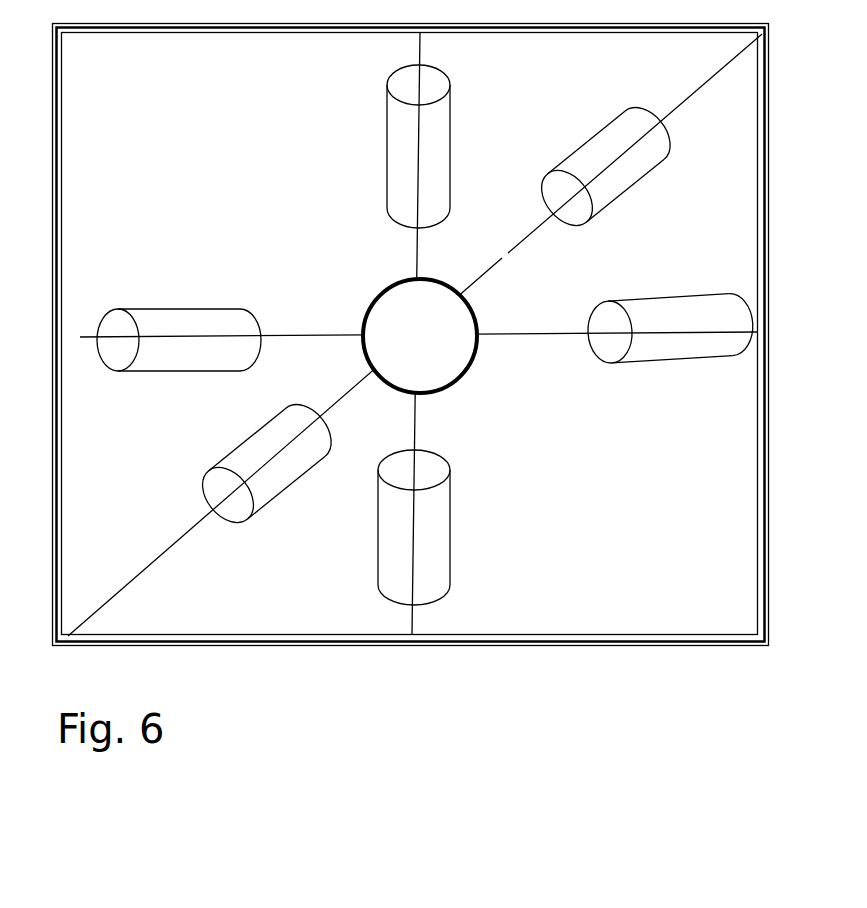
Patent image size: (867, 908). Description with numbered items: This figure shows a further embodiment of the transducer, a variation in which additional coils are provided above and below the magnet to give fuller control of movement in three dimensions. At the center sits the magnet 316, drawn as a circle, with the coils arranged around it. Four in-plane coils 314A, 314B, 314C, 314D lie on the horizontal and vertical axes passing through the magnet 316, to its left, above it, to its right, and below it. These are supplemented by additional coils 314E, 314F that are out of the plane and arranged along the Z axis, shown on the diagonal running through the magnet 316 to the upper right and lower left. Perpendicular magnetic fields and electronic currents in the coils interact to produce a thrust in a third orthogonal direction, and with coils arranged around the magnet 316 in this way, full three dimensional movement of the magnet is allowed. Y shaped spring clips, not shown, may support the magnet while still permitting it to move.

The coil 314A is at (183, 308).
The coil 314B is at (378, 188).
The coil 314C is at (706, 292).
The coil 314D is at (447, 540).
The additional coil 314E is at (530, 232).
The additional coil 314F is at (287, 485).
The magnet 316 is at (483, 325).